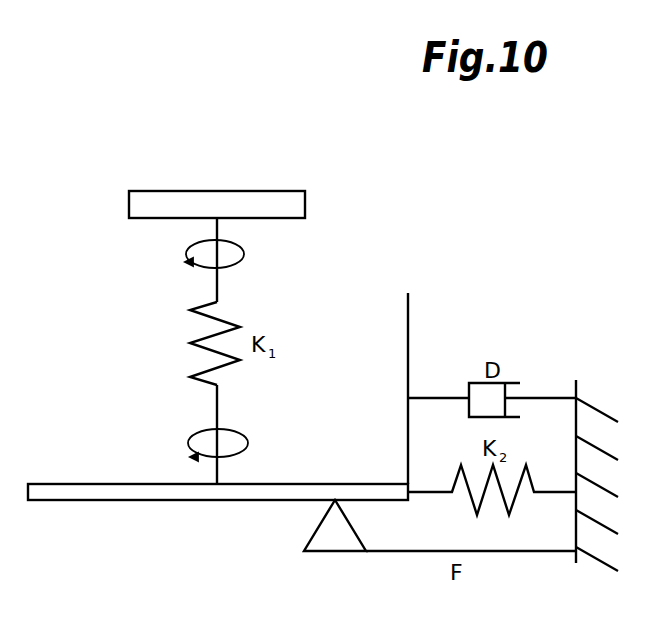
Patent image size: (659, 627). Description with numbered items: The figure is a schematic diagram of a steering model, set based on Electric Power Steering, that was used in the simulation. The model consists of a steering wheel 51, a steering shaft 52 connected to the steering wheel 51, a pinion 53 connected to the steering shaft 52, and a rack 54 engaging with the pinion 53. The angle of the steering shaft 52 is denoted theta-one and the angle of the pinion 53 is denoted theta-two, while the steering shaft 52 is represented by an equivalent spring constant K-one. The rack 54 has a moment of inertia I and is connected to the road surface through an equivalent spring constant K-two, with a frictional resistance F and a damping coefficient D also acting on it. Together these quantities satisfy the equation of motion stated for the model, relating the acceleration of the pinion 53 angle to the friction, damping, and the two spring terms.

The steering wheel 51 is at (257, 190).
The steering shaft 52 is at (213, 227).
The pinion 53 is at (215, 477).
The rack 54 is at (83, 501).